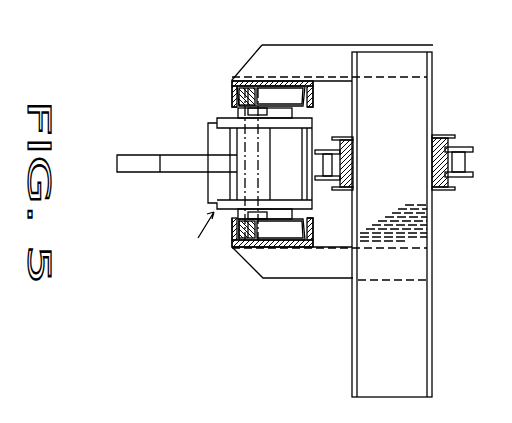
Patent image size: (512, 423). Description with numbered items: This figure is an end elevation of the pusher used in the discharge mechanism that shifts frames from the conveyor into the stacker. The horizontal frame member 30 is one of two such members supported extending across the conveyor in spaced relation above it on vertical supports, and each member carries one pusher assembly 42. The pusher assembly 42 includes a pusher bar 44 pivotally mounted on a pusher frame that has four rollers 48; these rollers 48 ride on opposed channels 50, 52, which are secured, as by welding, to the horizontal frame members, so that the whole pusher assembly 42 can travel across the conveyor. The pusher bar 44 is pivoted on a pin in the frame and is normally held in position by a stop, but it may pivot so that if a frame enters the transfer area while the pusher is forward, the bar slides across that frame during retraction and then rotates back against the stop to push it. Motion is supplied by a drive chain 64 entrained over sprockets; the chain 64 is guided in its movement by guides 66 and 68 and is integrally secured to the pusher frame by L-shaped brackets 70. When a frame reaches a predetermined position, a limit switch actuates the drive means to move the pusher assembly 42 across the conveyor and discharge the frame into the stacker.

The horizontal frame member 30 is at (255, 67).
The pusher assembly 42 is at (207, 109).
The pusher bar 44 is at (142, 168).
The rollers 48 is at (243, 91).
The channel 50 is at (278, 86).
The channel 52 is at (282, 247).
The drive chain 64 is at (332, 180).
The guide 66 is at (443, 190).
The guide 68 is at (342, 132).
The L-shaped bracket 70 is at (337, 137).